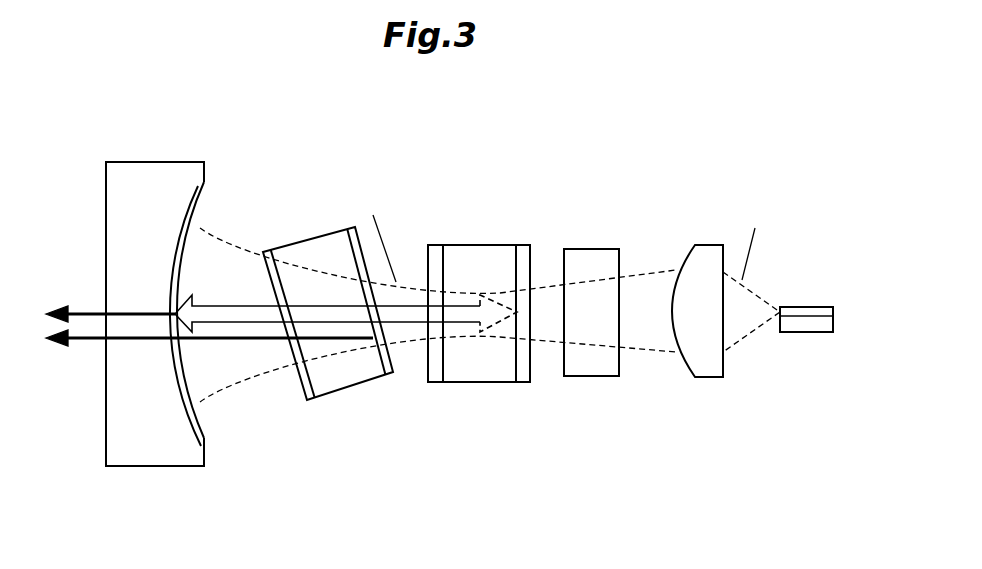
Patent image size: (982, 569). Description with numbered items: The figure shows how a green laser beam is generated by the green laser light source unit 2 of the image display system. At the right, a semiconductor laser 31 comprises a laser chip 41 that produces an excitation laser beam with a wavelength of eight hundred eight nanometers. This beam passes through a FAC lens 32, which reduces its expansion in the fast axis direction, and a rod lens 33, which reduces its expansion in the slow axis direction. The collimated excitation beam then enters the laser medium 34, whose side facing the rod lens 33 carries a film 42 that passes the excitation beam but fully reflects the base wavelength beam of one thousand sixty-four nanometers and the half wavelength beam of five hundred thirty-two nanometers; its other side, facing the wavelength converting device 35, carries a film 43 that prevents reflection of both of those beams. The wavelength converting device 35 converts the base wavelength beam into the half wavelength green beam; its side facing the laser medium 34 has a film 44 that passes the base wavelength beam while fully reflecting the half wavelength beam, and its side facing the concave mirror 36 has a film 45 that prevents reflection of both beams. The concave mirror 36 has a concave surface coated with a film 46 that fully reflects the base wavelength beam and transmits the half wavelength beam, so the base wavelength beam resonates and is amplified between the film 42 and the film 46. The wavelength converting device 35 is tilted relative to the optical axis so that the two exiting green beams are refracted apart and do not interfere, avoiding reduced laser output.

The green laser light source unit 2 is at (614, 150).
The semiconductor laser 31 is at (808, 330).
The laser chip 41 is at (808, 283).
The FAC lens 32 is at (708, 378).
The rod lens 33 is at (598, 377).
The laser medium 34 is at (490, 352).
The film 43 is at (437, 383).
The film 42 is at (534, 344).
The wavelength converting device 35 is at (334, 345).
The film 45 is at (310, 403).
The film 44 is at (392, 377).
The concave mirror 36 is at (187, 354).
The film 46 is at (201, 425).